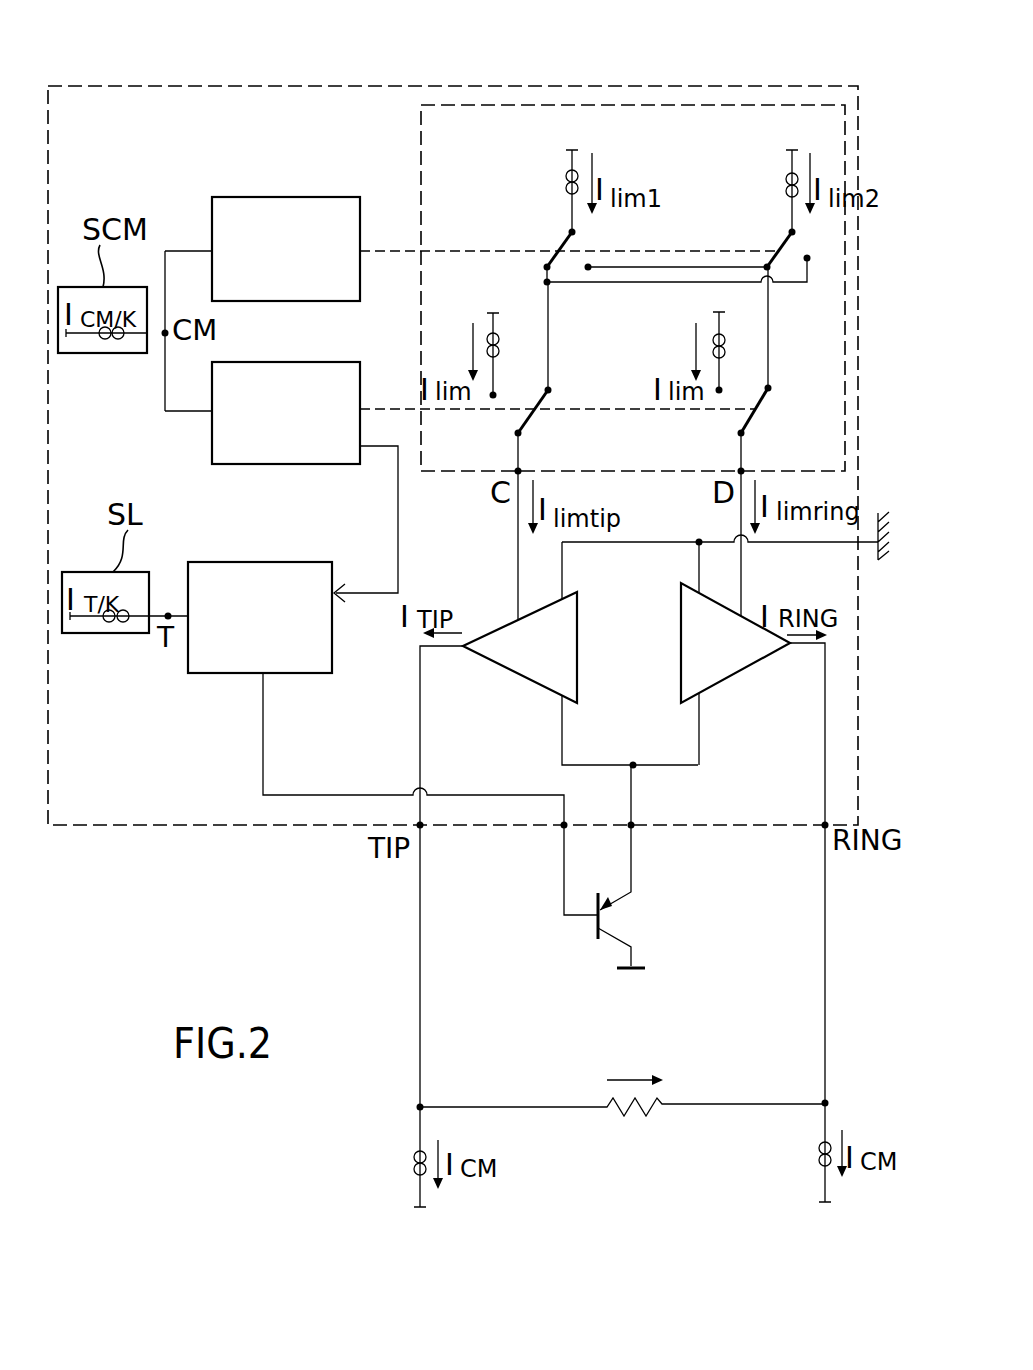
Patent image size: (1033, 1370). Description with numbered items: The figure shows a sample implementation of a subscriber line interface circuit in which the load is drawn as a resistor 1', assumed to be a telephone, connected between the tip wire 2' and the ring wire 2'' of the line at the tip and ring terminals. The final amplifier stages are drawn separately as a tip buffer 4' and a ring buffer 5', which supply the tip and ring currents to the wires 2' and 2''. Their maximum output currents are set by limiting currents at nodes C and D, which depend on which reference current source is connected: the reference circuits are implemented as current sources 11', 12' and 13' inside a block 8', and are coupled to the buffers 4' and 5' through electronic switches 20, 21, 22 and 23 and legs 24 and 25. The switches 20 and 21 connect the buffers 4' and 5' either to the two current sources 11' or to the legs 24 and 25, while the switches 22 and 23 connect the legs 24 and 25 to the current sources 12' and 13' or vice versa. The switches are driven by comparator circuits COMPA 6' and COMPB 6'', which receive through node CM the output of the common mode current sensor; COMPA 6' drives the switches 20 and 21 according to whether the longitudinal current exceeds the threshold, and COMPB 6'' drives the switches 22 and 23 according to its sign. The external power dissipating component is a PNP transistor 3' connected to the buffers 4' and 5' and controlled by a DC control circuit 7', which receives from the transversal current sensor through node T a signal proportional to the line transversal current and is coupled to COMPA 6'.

The resistor 1' is at (623, 1104).
The tip wire 2' is at (399, 876).
The ring wire 2'' is at (789, 873).
The PNP transistor 3' is at (651, 894).
The tip buffer 4' is at (580, 599).
The ring buffer 5' is at (738, 599).
The comparator circuit COMPA 6' is at (293, 391).
The comparator circuit COMPB 6'' is at (286, 220).
The DC control circuit 7' is at (259, 644).
The block 8' is at (633, 248).
The current source 11' is at (635, 343).
The current source 12' is at (540, 178).
The current source 13' is at (760, 178).
The electronic switch 20 is at (535, 412).
The electronic switch 21 is at (755, 412).
The electronic switch 22 is at (786, 240).
The electronic switch 23 is at (556, 252).
The leg 24 is at (548, 343).
The leg 25 is at (768, 355).